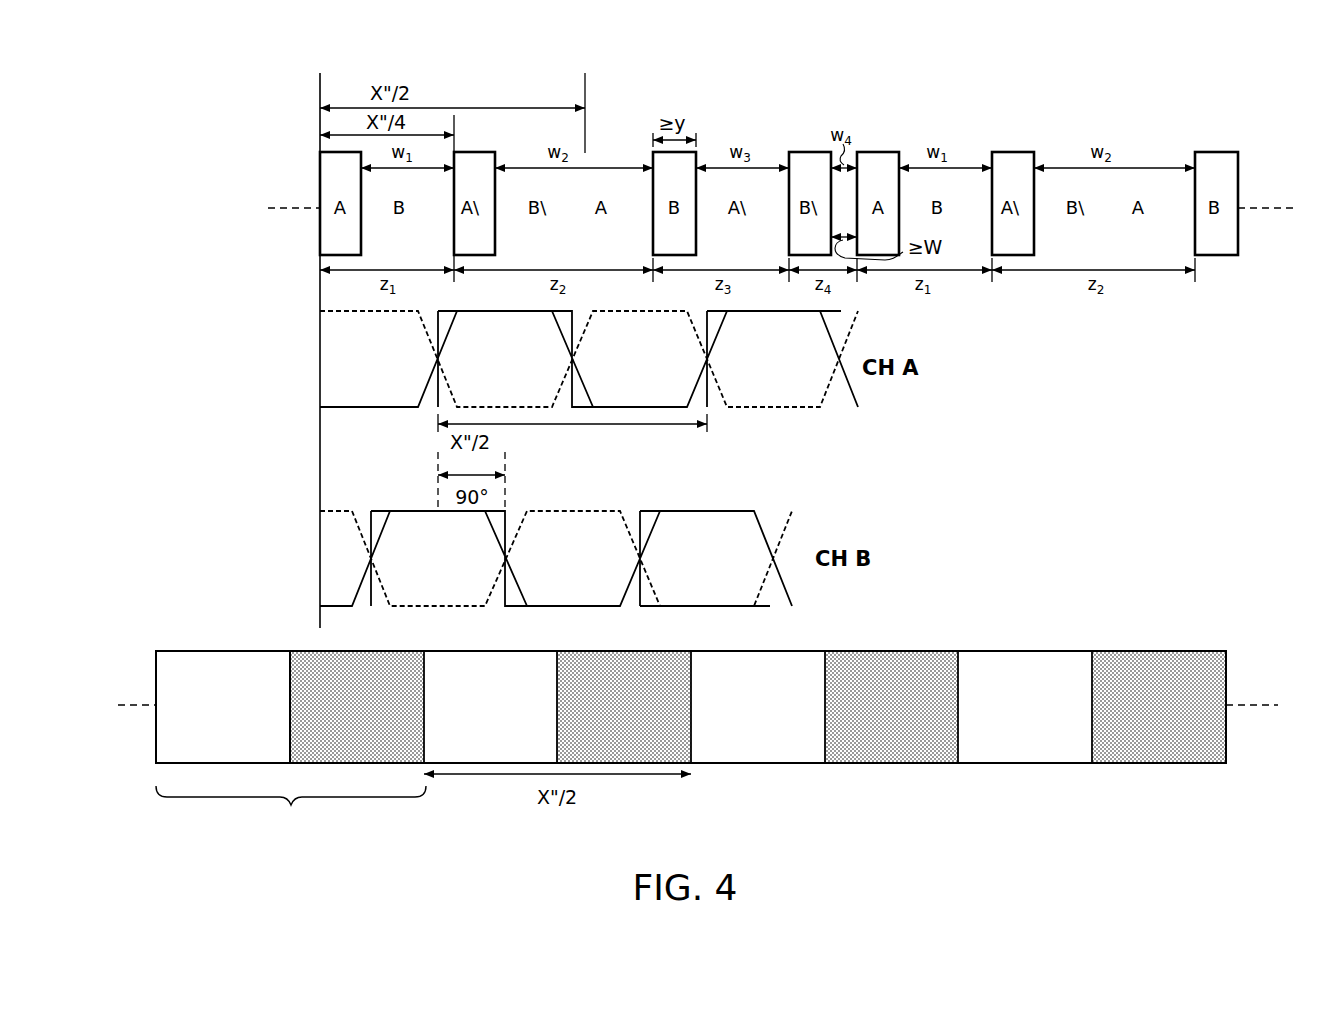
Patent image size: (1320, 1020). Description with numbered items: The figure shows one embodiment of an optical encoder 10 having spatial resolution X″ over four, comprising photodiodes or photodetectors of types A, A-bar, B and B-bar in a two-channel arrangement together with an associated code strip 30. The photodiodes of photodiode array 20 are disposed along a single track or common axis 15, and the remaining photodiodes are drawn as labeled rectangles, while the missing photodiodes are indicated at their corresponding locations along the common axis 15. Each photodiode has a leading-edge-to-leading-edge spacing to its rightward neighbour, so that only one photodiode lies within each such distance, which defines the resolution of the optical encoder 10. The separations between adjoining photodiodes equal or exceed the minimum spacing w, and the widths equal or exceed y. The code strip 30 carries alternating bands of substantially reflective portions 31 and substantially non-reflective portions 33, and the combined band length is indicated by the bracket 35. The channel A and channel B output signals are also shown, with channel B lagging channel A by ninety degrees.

The optical encoder 10 is at (232, 143).
The common axis 15 is at (706, 456).
The photodiode array 20 is at (1261, 168).
The code strip 30 is at (1207, 638).
The substantially reflective portion 31 is at (218, 660).
The substantially non-reflective portion 33 is at (357, 666).
The scale period 35 is at (291, 806).